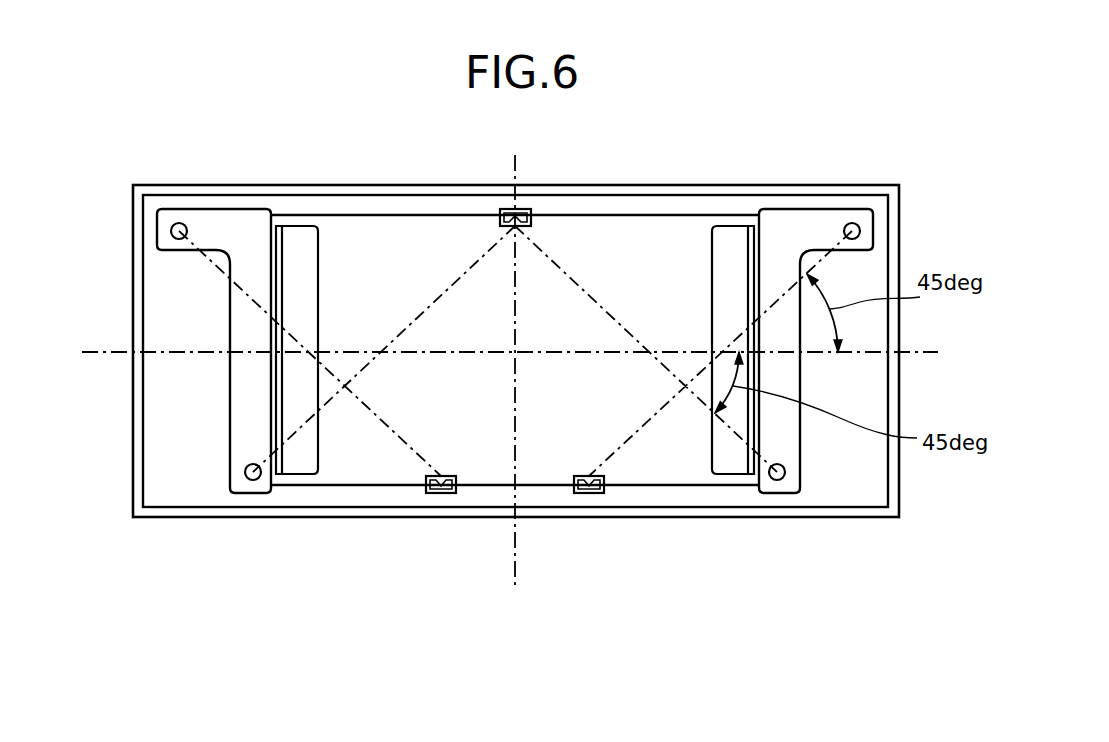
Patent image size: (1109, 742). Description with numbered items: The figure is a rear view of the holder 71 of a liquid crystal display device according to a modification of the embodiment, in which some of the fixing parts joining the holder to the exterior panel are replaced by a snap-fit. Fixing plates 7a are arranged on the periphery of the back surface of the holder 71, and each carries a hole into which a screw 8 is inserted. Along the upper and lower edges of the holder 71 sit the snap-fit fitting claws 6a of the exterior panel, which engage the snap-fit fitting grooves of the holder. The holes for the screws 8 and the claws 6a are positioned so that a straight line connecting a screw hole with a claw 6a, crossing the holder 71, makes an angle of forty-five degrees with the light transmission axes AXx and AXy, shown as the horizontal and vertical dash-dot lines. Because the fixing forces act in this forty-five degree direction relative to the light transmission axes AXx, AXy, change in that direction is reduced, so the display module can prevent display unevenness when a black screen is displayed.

The holder 71 is at (657, 243).
The fixing plate 7a is at (240, 440).
The screw 8 is at (171, 232).
The snap-fit fitting claw 6a is at (527, 211).
The light transmission axis AXx is at (93, 356).
The light transmission axis AXy is at (512, 578).